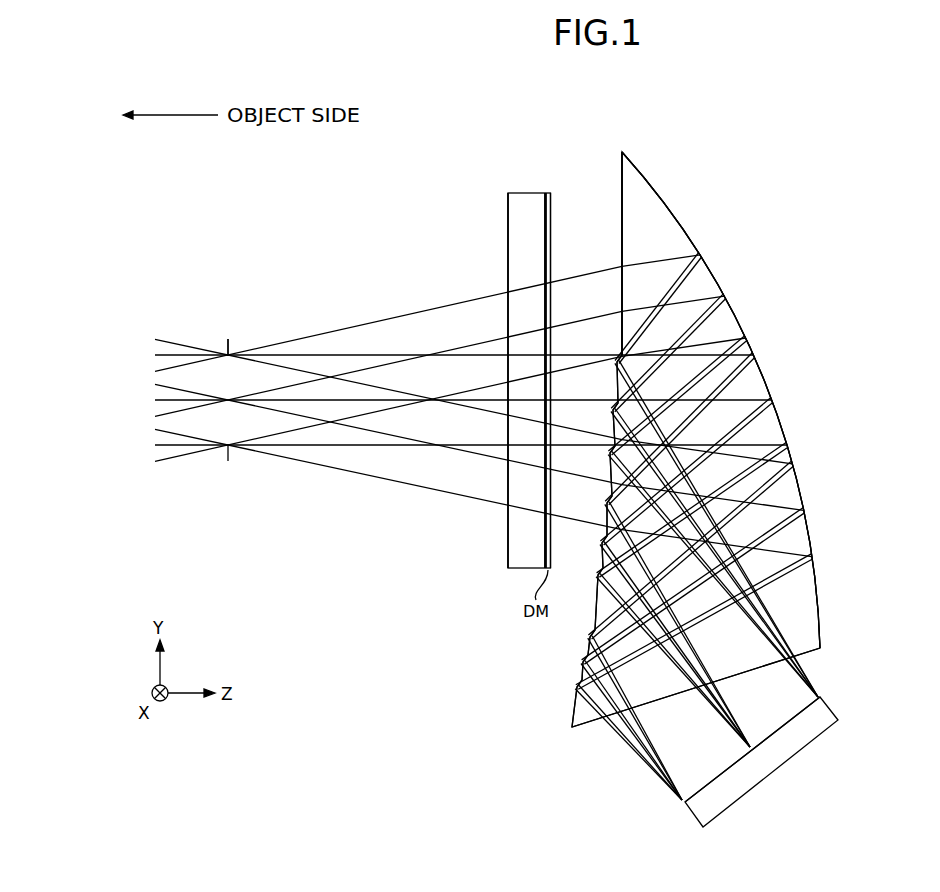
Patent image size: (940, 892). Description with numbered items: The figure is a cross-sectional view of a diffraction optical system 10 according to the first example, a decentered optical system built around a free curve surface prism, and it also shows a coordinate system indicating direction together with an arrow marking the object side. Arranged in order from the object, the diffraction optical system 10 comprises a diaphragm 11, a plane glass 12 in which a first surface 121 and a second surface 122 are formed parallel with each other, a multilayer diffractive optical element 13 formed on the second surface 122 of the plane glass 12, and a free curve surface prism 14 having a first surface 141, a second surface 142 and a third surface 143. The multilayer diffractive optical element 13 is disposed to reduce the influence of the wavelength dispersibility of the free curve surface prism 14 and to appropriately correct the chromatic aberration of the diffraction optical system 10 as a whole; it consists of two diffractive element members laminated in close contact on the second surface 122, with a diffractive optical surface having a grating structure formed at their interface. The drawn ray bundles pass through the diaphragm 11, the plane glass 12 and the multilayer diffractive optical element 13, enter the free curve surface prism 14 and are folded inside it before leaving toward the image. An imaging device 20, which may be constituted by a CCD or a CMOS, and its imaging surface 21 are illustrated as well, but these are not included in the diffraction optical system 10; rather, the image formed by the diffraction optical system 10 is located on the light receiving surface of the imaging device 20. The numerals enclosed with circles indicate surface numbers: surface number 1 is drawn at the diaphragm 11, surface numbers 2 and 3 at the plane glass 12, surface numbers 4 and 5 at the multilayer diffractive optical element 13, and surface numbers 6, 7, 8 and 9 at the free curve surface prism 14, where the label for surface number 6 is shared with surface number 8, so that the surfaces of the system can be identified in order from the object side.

The diffraction optical system 10 is at (818, 119).
The diaphragm 11 is at (232, 347).
The plane glass 12 is at (515, 190).
The first surface 121 is at (508, 200).
The second surface 122 is at (546, 194).
The multilayer diffractive optical element 13 is at (550, 190).
The free curve surface prism 14 is at (658, 182).
The first surface 141 is at (622, 246).
The second surface 142 is at (691, 240).
The third surface 143 is at (578, 730).
The imaging device 20 is at (846, 711).
The imaging surface 21 is at (700, 787).
The surface number 1 is at (228, 347).
The surface number 2 is at (508, 222).
The surface number 3 is at (544, 194).
The surface number 4 is at (551, 203).
The surface number 5 is at (551, 225).
The surface number 6 is at (622, 166).
The surface number 7 is at (670, 212).
The surface number 8 is at (638, 236).
The surface number 9 is at (822, 652).